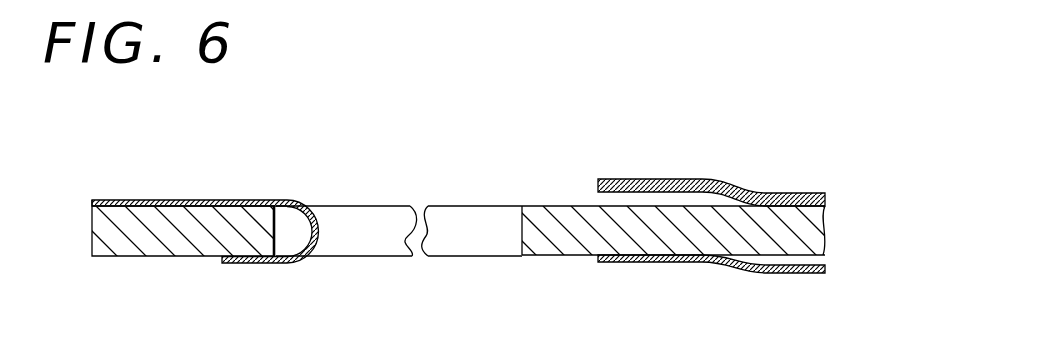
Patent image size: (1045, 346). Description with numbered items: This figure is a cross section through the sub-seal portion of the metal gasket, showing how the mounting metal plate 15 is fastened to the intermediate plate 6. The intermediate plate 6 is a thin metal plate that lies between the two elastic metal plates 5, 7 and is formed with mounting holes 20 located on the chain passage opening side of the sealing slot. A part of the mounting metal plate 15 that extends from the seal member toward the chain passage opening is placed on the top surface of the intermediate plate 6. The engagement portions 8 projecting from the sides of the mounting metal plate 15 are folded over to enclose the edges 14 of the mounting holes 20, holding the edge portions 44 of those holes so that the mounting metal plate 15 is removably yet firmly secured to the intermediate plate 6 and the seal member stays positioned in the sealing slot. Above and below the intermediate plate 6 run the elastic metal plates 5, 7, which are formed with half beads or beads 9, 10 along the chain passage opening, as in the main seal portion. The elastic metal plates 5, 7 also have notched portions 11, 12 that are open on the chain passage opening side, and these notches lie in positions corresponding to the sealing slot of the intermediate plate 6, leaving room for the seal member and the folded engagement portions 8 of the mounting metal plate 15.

The elastic metal plate 5 is at (689, 153).
The intermediate plate 6 is at (176, 237).
The elastic metal plate 7 is at (707, 298).
The engagement portion 8 is at (288, 200).
The half bead or bead 9 is at (732, 186).
The half bead or bead 10 is at (762, 268).
The notched portion 11 is at (597, 185).
The notched portion 12 is at (600, 259).
The edge of mounting hole 14 is at (277, 265).
The mounting metal plate 15 is at (154, 200).
The mounting hole 20 is at (370, 226).
The edge portion of mounting hole 44 is at (250, 228).